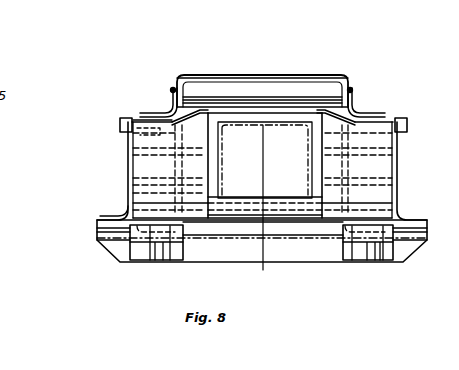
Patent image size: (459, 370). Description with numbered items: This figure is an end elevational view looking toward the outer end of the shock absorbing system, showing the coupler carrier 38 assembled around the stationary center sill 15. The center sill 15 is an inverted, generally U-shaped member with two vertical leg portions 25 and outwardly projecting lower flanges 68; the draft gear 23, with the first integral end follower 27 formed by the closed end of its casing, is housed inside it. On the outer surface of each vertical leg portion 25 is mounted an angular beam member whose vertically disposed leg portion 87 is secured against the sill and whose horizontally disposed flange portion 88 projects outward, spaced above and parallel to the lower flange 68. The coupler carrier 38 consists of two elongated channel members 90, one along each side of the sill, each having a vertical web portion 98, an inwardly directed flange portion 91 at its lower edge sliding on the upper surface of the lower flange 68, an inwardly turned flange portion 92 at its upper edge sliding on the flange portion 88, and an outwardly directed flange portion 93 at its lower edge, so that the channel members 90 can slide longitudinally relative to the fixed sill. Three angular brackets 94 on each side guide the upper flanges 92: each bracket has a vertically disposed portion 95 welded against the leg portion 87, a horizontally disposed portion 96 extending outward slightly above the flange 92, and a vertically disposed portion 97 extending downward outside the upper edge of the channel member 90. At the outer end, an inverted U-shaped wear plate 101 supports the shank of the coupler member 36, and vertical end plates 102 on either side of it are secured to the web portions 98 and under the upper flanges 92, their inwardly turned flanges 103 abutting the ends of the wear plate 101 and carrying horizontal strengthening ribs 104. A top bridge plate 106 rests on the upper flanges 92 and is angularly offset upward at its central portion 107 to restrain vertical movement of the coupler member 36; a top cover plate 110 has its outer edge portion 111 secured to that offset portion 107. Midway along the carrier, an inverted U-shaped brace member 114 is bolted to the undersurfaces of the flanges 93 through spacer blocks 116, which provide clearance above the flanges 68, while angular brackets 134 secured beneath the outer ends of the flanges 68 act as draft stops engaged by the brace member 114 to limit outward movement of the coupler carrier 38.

The center sill 15 is at (289, 102).
The draft gear 23 is at (313, 195).
The vertical leg portions 25 is at (190, 104).
The first integral end follower 27 is at (212, 190).
The coupler member 36 is at (264, 125).
The coupler carrier 38 is at (95, 247).
The lower flanges 68 is at (150, 227).
The vertically disposed leg portion 87 is at (175, 88).
The horizontally disposed flange portion 88 is at (137, 130).
The channel members 90 is at (125, 176).
The inwardly directed flange portion 91 is at (133, 241).
The inwardly turned flange portion 92 is at (126, 118).
The outwardly directed flange portions 93 is at (108, 216).
The angular brackets 94 is at (145, 116).
The vertically disposed portion 95 is at (168, 108).
The horizontally disposed portion 96 is at (143, 118).
The vertically disposed portion 97 is at (120, 122).
The vertical web portions 98 is at (128, 193).
The wear plate 101 is at (270, 200).
The end plates 102 is at (333, 123).
The inwardly turned flanges 103 is at (216, 182).
The strengthening ribs 104 is at (222, 172).
The top bridge plate 106 is at (277, 71).
The upwardly offset portion 107 is at (266, 130).
The top cover plate 110 is at (222, 98).
The outer edge portion 111 is at (233, 106).
The brace member 114 is at (300, 248).
The spacer blocks 116 is at (97, 233).
The angular brackets 134 is at (165, 238).